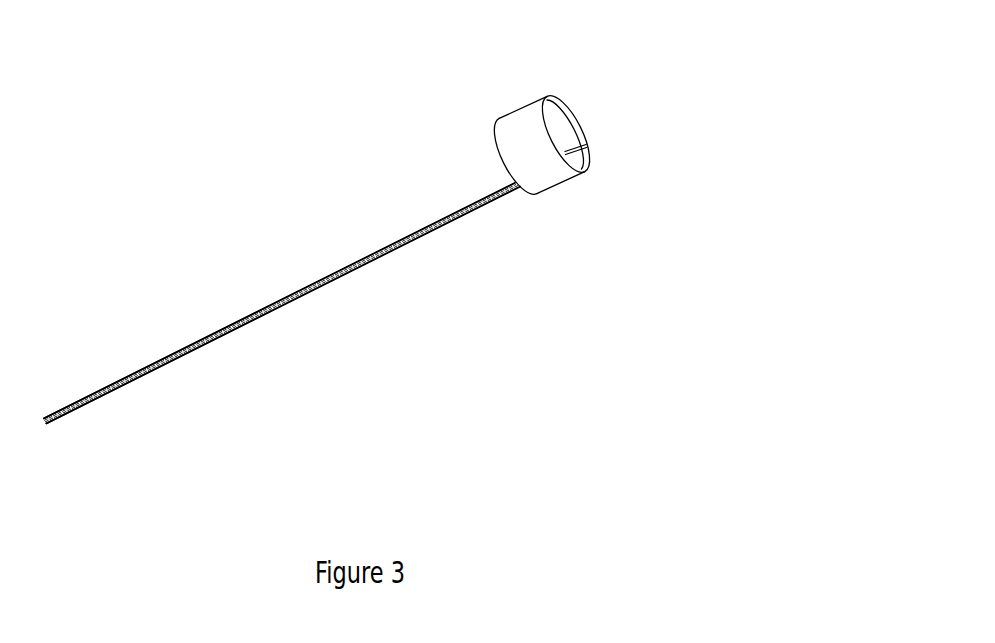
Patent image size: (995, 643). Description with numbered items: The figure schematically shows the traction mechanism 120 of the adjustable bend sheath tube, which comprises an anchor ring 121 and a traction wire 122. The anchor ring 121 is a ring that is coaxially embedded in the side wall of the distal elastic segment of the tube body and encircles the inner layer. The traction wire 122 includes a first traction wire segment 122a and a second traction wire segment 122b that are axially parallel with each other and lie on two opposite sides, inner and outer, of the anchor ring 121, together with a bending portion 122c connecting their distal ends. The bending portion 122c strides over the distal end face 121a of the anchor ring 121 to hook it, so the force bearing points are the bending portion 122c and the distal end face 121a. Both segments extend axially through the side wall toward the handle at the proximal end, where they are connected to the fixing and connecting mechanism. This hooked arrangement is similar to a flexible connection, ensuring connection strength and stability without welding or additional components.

The traction mechanism 120 is at (210, 233).
The anchor ring 121 is at (552, 177).
The distal end face 121a is at (543, 106).
The traction wire 122 is at (379, 248).
The first traction wire segment 122a is at (200, 347).
The second traction wire segment 122b is at (163, 358).
The bending portion 122c is at (586, 147).